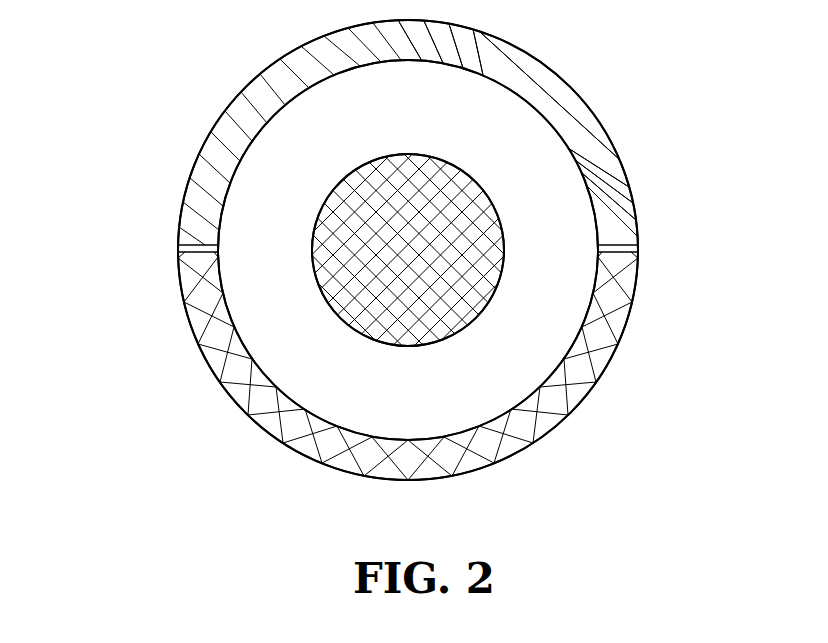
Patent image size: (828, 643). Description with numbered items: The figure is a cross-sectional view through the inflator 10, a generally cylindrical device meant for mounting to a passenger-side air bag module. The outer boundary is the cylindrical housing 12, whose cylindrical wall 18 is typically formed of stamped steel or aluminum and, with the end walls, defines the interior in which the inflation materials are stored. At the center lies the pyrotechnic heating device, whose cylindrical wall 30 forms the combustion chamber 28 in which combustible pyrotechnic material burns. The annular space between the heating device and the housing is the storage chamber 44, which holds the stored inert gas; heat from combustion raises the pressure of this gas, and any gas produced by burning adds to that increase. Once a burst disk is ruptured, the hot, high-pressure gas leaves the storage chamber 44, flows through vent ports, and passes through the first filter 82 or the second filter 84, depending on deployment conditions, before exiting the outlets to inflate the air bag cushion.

The inflator 10 is at (163, 110).
The cylindrical housing 12 is at (636, 321).
The cylindrical wall 18 is at (288, 75).
The combustion chamber 28 is at (468, 267).
The cylindrical wall 30 is at (493, 197).
The storage chamber 44 is at (256, 198).
The first filter 82 is at (550, 87).
The second filter 84 is at (509, 443).